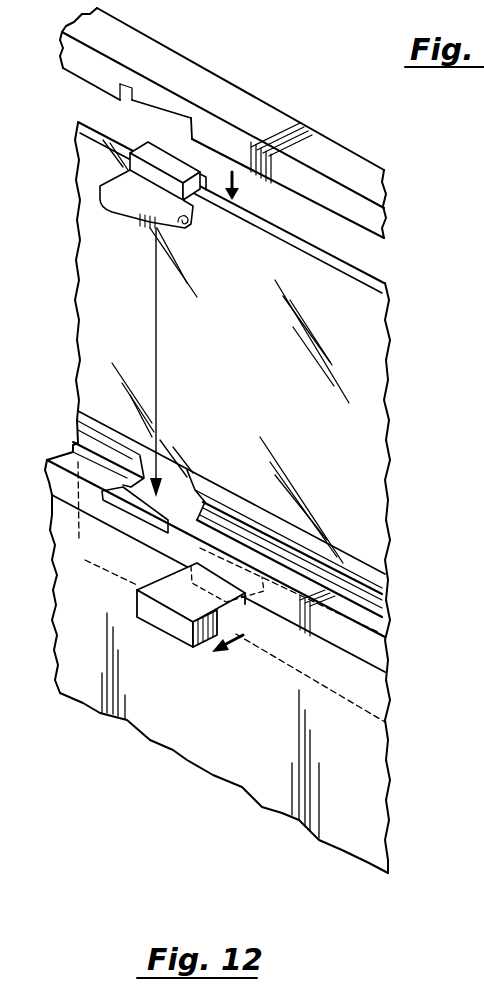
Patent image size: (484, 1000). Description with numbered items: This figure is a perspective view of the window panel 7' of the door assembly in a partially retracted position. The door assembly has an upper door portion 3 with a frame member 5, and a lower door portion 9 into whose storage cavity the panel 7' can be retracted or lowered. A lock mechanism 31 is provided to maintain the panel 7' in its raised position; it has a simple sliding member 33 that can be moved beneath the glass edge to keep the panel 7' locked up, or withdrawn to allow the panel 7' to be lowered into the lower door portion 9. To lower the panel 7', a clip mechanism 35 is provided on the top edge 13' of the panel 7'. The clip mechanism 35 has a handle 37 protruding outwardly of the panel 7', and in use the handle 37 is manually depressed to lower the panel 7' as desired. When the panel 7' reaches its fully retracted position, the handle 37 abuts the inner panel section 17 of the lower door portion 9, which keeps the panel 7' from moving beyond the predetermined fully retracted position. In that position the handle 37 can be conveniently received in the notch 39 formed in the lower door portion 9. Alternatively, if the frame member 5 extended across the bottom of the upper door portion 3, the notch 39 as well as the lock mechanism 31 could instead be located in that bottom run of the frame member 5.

The upper door portion 3 is at (303, 397).
The frame member 5 is at (254, 123).
The panel 7' is at (230, 395).
The lower door portion 9 is at (236, 732).
The top edge 13' is at (202, 339).
The inner panel section 17 is at (88, 607).
The lock mechanism 31 is at (158, 585).
The sliding member 33 is at (240, 610).
The clip mechanism 35 is at (165, 135).
The handle 37 is at (130, 319).
The notch 39 is at (173, 500).